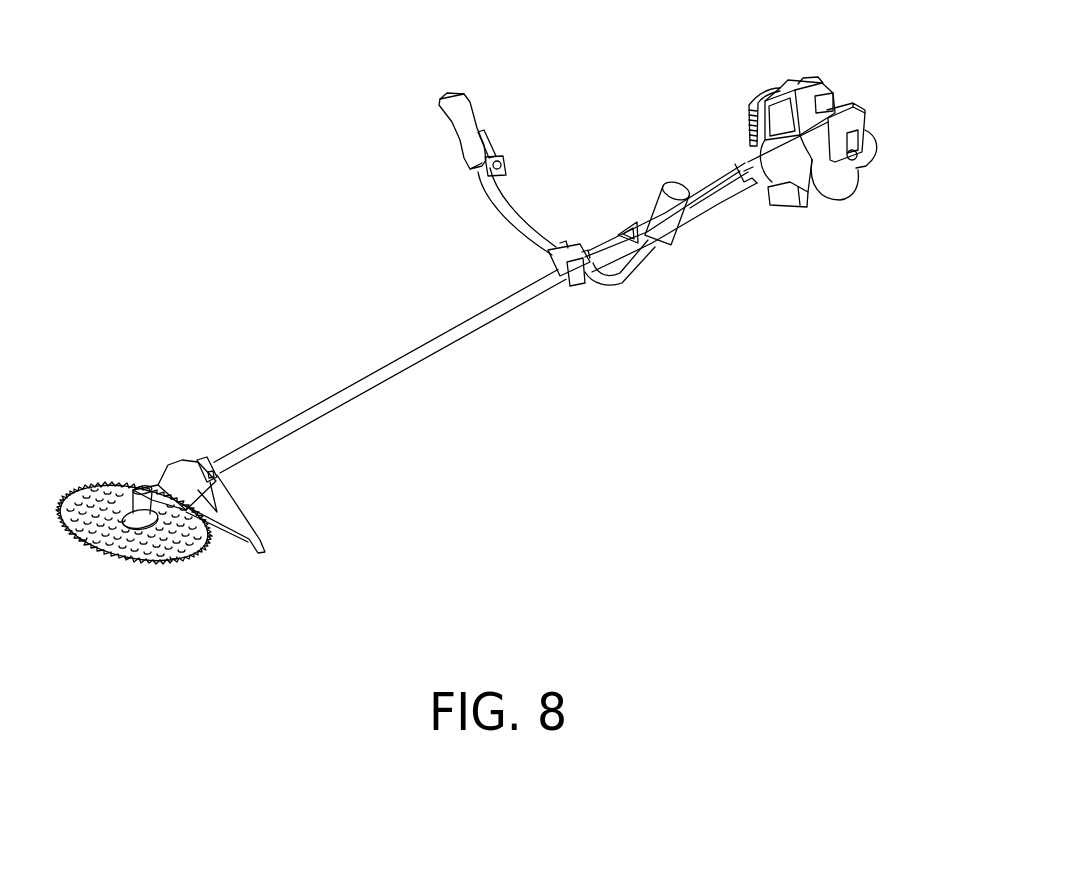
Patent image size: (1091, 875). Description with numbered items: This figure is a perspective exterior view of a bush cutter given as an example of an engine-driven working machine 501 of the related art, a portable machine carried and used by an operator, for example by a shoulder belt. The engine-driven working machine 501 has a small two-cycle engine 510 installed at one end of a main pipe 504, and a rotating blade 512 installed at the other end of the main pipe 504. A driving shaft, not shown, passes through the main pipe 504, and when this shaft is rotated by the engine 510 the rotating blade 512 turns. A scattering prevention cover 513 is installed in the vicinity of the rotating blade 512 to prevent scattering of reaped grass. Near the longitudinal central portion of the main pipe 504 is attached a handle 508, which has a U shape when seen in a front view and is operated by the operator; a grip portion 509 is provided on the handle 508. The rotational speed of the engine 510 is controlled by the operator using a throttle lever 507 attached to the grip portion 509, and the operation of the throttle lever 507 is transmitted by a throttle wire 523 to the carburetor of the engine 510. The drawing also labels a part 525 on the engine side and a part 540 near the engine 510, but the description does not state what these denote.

The engine-driven working machine 501 is at (231, 101).
The main pipe 504 is at (367, 383).
The throttle lever 507 is at (484, 136).
The handle 508 is at (503, 217).
The grip portion 509 is at (448, 118).
The engine 510 is at (821, 73).
The rotating blade 512 is at (157, 556).
The scattering prevention cover 513 is at (245, 526).
The throttle wire 523 is at (700, 219).
The air cleaner cover 525 is at (862, 128).
The rear handle 540 is at (757, 106).